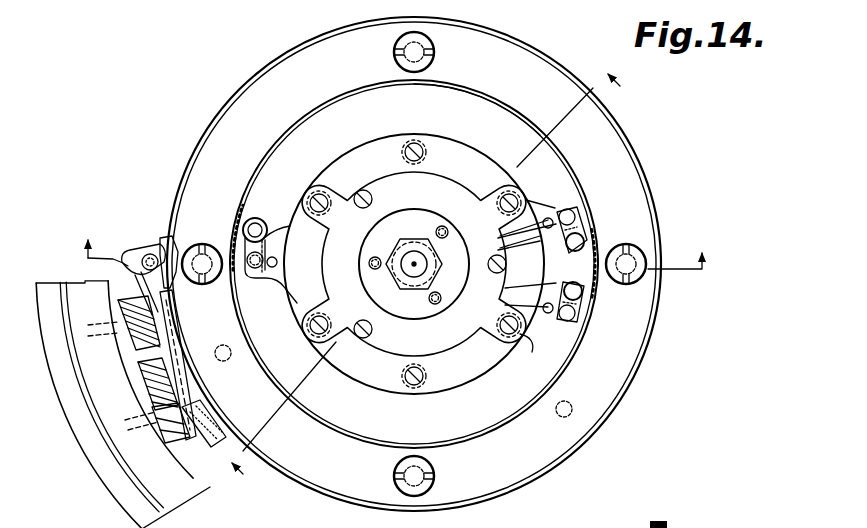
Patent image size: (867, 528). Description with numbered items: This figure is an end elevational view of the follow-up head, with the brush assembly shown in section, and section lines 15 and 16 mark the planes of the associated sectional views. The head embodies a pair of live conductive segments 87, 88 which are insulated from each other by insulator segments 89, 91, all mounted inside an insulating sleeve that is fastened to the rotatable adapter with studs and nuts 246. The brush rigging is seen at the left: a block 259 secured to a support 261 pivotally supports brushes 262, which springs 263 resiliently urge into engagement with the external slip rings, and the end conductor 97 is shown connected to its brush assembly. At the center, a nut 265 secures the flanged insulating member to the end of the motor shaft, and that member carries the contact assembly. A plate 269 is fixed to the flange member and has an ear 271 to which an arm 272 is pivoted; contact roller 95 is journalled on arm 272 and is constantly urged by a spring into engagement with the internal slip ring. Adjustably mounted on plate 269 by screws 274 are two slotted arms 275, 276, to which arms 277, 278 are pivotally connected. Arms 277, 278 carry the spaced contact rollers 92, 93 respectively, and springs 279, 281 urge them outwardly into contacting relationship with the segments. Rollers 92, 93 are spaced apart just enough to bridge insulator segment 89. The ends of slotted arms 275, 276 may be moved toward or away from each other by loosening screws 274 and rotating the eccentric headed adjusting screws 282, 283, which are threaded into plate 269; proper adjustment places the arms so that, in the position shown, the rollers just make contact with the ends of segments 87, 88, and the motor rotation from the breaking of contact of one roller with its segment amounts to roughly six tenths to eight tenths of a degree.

The section line 15 is at (395, 244).
The section line 16 is at (434, 286).
The conductive segment 87 is at (474, 97).
The conductive segment 88 is at (486, 432).
The insulator segment 89 is at (598, 251).
The insulator segment 91 is at (207, 244).
The contact roller 92 is at (548, 232).
The contact roller 93 is at (562, 290).
The contact roller 95 is at (258, 216).
The end conductor 97 is at (214, 470).
The nut 246 is at (636, 277).
The block 259 is at (116, 300).
The support 261 is at (103, 413).
The brush 262 is at (168, 232).
The spring 263 is at (128, 250).
The nut 265 is at (414, 240).
The plate 269 is at (360, 250).
The ear 271 is at (258, 290).
The arm 272 is at (236, 240).
The screws 274 is at (318, 192).
The slotted arm 275 is at (467, 153).
The slotted arm 276 is at (478, 387).
The arm 277 is at (586, 228).
The arm 278 is at (584, 305).
The spring 279 is at (500, 240).
The spring 281 is at (534, 343).
The eccentric headed adjusting screw 282 is at (413, 142).
The eccentric headed adjusting screw 283 is at (414, 386).